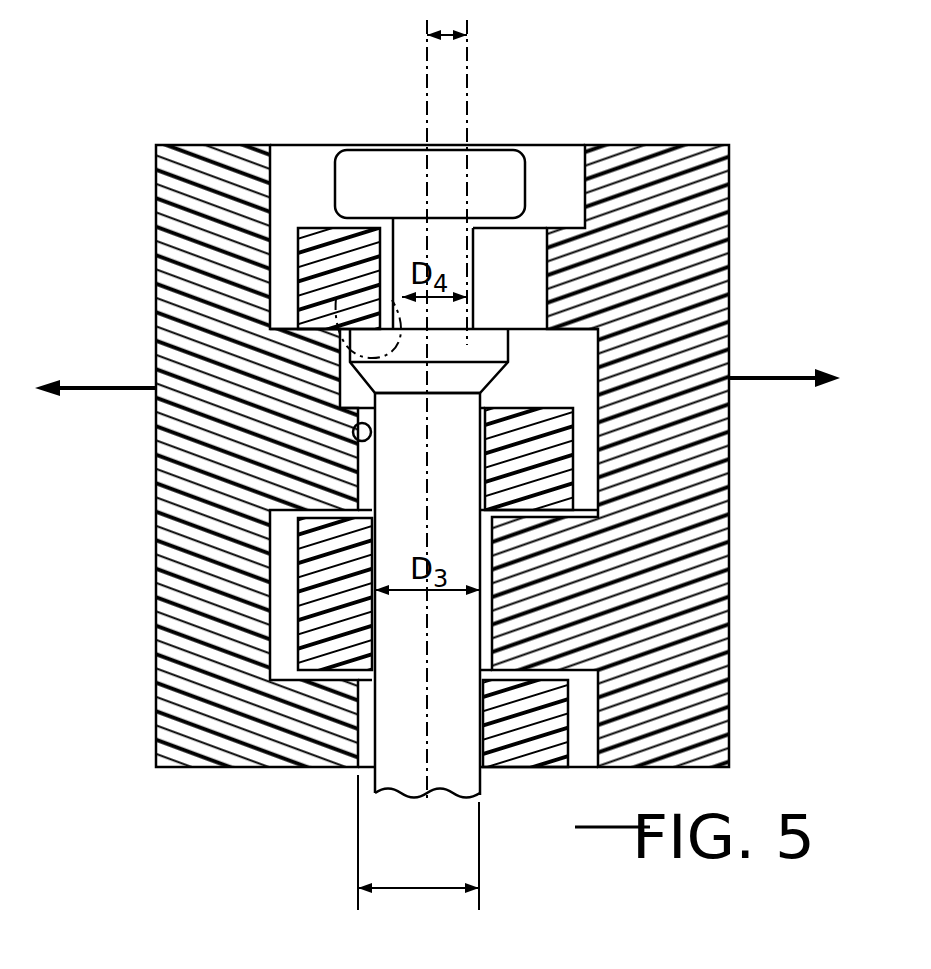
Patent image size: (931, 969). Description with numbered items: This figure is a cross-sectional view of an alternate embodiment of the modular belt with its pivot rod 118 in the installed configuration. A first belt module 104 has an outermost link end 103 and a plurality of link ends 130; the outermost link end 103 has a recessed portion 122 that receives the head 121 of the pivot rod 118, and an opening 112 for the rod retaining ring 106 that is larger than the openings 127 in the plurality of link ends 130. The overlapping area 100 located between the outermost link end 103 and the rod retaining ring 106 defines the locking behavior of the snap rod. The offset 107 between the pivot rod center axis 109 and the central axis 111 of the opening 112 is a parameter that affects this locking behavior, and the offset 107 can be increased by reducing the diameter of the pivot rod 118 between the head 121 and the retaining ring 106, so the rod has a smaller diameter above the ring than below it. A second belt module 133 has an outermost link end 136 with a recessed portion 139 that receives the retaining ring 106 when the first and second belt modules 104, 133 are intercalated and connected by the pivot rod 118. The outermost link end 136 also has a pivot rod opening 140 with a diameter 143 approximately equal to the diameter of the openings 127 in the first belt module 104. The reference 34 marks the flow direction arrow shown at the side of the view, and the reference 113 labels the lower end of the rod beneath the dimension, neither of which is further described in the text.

The fluid outlet flow arrow 34 is at (797, 378).
The overlapping area 100 is at (403, 317).
The outermost link end 103 is at (327, 250).
The first belt module 104 is at (690, 477).
The rod retaining ring 106 is at (488, 347).
The offset 107 is at (447, 35).
The pivot rod center axis 109 is at (427, 70).
The central axis 111 is at (470, 105).
The opening 112 is at (487, 263).
The tube 113 is at (397, 681).
The pivot rod 118 is at (463, 562).
The head 121 is at (373, 172).
The recessed portion 122 is at (583, 190).
The openings 127 is at (590, 593).
The plurality of link ends 130 is at (322, 652).
The second belt module 133 is at (183, 487).
The outermost link end 136 is at (547, 455).
The recessed portion 139 is at (358, 387).
The pivot rod opening 140 is at (352, 428).
The diameter 143 is at (417, 890).